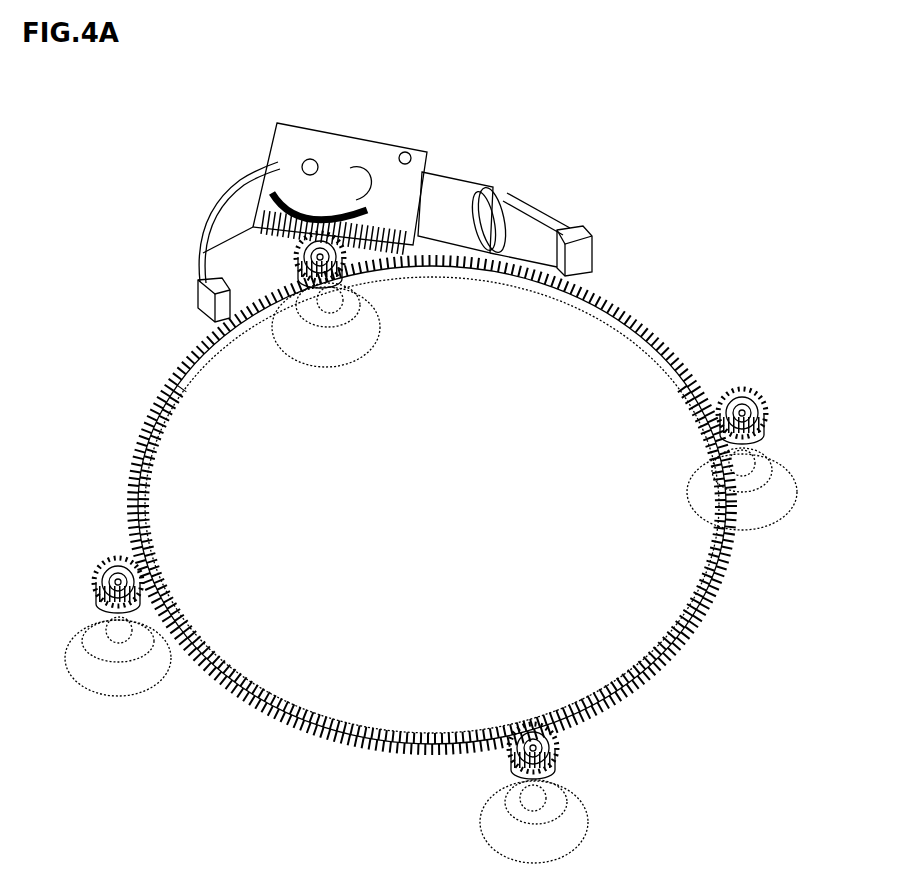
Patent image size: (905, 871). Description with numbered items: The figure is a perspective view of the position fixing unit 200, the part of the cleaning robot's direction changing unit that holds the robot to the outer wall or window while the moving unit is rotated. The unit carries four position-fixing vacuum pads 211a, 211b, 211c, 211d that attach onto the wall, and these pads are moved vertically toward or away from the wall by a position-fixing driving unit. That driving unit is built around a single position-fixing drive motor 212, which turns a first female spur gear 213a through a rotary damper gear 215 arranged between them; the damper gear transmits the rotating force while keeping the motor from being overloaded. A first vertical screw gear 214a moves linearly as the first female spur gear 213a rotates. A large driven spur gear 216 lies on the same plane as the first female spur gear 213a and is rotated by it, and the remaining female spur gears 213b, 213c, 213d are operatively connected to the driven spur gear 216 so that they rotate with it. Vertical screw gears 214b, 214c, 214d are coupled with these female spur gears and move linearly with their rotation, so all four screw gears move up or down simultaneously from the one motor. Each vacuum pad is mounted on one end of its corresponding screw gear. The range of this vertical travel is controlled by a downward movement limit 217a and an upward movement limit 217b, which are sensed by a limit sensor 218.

The position fixing unit 200 is at (688, 170).
The position-fixing vacuum pad 211a is at (307, 347).
The position-fixing vacuum pad 211b is at (78, 663).
The position-fixing vacuum pad 211c is at (567, 833).
The position-fixing vacuum pad 211d is at (780, 497).
The position-fixing drive motor 212 is at (460, 187).
The first female spur gear 213a is at (293, 248).
The female spur gear 213b is at (110, 633).
The female spur gear 213c is at (572, 745).
The female spur gear 213d is at (782, 417).
The first vertical screw gear 214a is at (343, 300).
The vertical screw gear 214b is at (140, 663).
The vertical screw gear 214c is at (546, 797).
The vertical screw gear 214d is at (755, 467).
The rotary damper gear 215 is at (263, 182).
The driven spur gear 216 is at (700, 630).
The downward movement limit 217a is at (593, 248).
The upward movement limit 217b is at (207, 313).
The limit sensor 218 is at (530, 281).